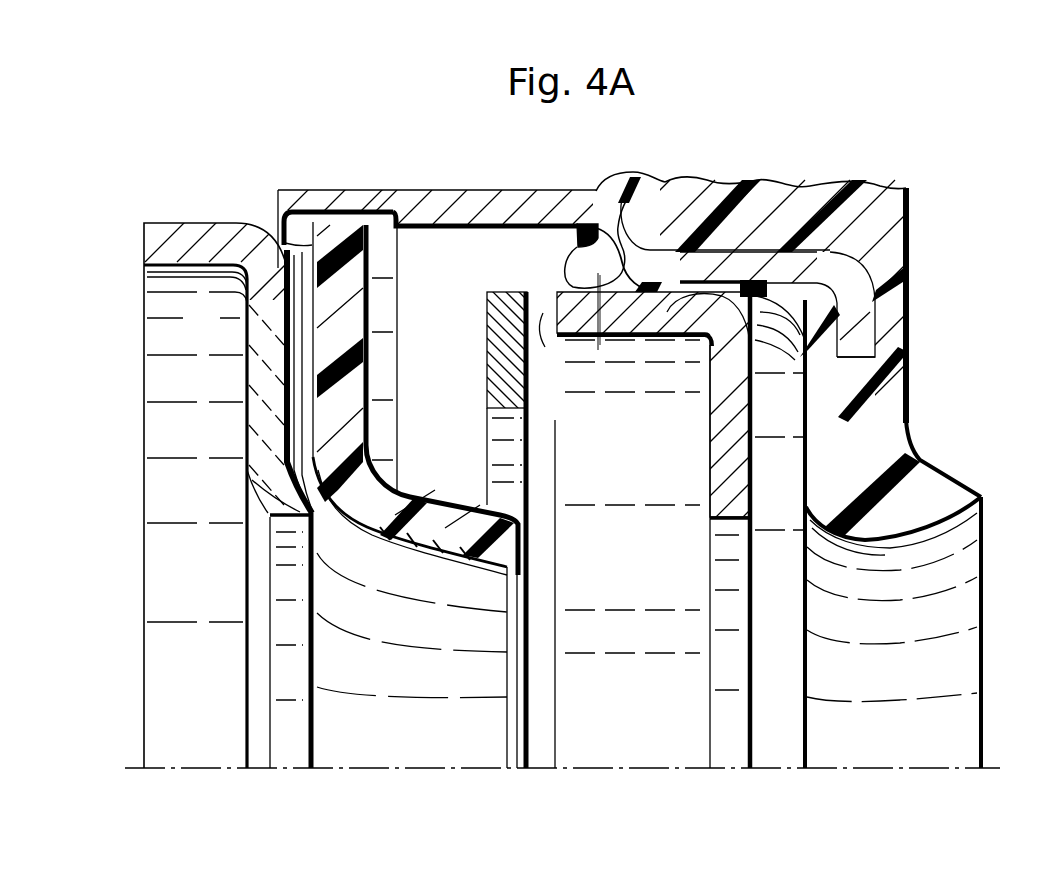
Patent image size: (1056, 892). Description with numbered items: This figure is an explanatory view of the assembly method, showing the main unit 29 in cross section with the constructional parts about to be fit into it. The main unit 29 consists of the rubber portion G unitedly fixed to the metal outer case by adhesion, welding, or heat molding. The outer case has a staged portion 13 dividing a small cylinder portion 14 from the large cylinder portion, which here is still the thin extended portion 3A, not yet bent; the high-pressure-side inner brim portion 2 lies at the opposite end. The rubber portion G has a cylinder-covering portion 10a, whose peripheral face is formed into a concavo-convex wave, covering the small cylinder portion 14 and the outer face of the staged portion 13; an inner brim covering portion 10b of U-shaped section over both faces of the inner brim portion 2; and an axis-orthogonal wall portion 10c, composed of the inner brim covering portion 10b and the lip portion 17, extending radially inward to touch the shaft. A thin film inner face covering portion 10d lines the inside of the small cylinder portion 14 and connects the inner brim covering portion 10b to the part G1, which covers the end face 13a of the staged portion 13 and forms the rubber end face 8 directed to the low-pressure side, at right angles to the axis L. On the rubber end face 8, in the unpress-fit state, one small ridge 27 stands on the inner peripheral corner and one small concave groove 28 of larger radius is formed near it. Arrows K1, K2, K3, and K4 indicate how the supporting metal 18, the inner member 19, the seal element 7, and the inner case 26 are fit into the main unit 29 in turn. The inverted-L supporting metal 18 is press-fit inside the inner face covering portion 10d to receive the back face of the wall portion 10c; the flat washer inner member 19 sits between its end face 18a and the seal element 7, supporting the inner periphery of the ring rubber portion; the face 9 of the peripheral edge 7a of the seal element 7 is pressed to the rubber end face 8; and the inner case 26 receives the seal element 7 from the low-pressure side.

The thin extended portion 3A is at (305, 190).
The face 9 is at (372, 243).
The small concave groove 28 is at (545, 228).
The rubber end face 8 is at (582, 228).
The staged portion 13 is at (643, 178).
The end face 13a is at (655, 245).
The small cylinder portion 14 is at (743, 257).
The cylinder-covering portion 10a is at (833, 190).
The rubber portion G is at (878, 222).
The main unit 29 is at (910, 211).
The peripheral edge 7a is at (427, 258).
The small ridge 27 is at (577, 277).
The arrow K4 is at (292, 376).
The arrow K3 is at (333, 410).
The arrow K2 is at (470, 378).
The inner member 19 is at (497, 350).
The inner case 26 is at (258, 420).
The inner brim covering portion 10b is at (897, 277).
The inner brim portion 2 is at (865, 323).
The axis-orthogonal wall portion 10c is at (913, 405).
The inner face covering portion 10d is at (673, 300).
The part of the rubber portion G1 is at (598, 352).
The end face 18a is at (573, 340).
The arrow K1 is at (688, 485).
The supporting metal 18 is at (697, 470).
The seal element 7 is at (355, 540).
The lip portion 17 is at (895, 513).
The axis L is at (391, 765).